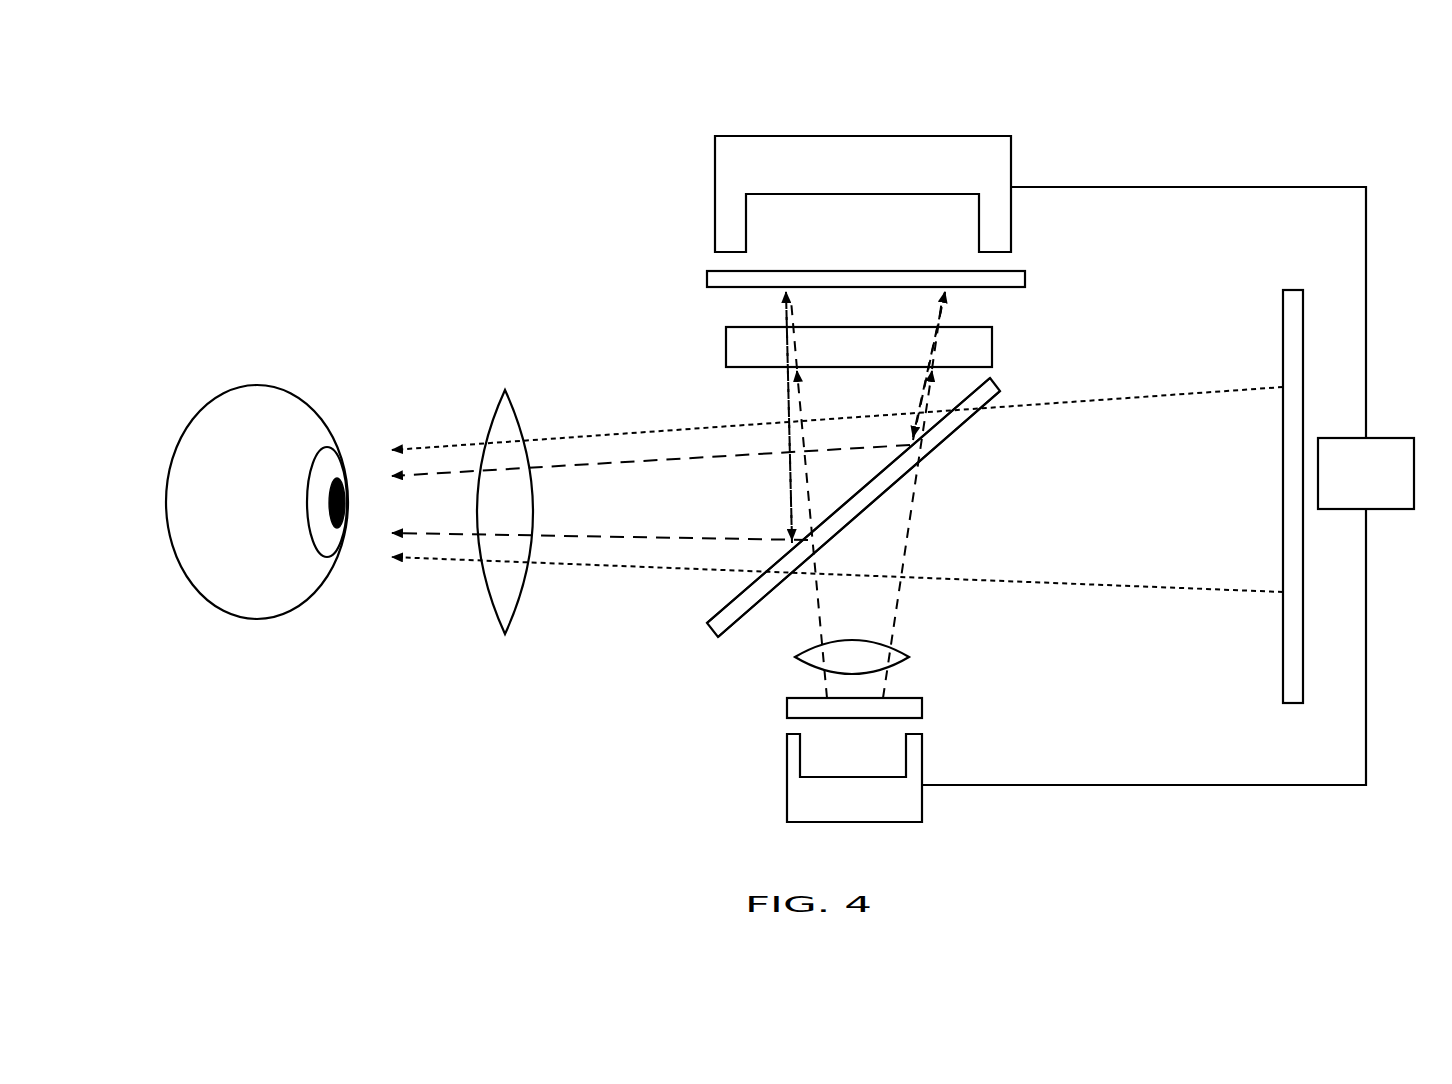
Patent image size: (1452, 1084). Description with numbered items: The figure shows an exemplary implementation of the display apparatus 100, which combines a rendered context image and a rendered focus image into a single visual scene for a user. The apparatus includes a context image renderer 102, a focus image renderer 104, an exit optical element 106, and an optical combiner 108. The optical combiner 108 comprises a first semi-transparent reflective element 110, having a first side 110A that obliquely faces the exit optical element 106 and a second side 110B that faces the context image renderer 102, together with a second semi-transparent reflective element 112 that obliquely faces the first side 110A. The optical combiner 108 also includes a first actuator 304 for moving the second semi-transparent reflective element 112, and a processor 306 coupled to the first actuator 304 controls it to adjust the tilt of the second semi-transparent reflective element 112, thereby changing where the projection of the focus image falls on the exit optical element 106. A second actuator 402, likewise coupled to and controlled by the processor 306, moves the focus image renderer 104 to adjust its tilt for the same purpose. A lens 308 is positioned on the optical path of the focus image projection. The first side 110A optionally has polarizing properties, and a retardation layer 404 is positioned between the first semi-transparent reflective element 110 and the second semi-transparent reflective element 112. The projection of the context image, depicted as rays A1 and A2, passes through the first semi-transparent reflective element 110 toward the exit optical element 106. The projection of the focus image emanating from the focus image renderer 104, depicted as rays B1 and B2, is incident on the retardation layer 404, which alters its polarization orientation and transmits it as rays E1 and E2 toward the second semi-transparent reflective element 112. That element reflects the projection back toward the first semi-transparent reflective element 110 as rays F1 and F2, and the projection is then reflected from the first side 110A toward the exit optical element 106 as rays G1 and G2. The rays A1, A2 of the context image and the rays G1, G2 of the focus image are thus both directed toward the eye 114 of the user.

The display apparatus 100 is at (1275, 170).
The context image renderer 102 is at (1283, 330).
The focus image renderer 104 is at (922, 708).
The exit optical element 106 is at (512, 396).
The optical combiner 108 is at (1022, 366).
The first semi-transparent reflective element 110 is at (712, 636).
The first side 110A is at (730, 597).
The second side 110B is at (735, 636).
The second semi-transparent reflective element 112 is at (1015, 269).
The eye 114 is at (258, 622).
The first actuator 304 is at (714, 199).
The processor 306 is at (1387, 488).
The lens 308 is at (905, 656).
The second actuator 402 is at (787, 792).
The retardation layer 404 is at (726, 352).
The ray A1 is at (1143, 396).
The ray A2 is at (1143, 598).
The ray B1 is at (895, 628).
The ray B2 is at (820, 646).
The ray E1 is at (942, 318).
The ray E2 is at (790, 318).
The ray F1 is at (920, 407).
The ray F2 is at (787, 407).
The ray G1 is at (562, 465).
The ray G2 is at (622, 538).